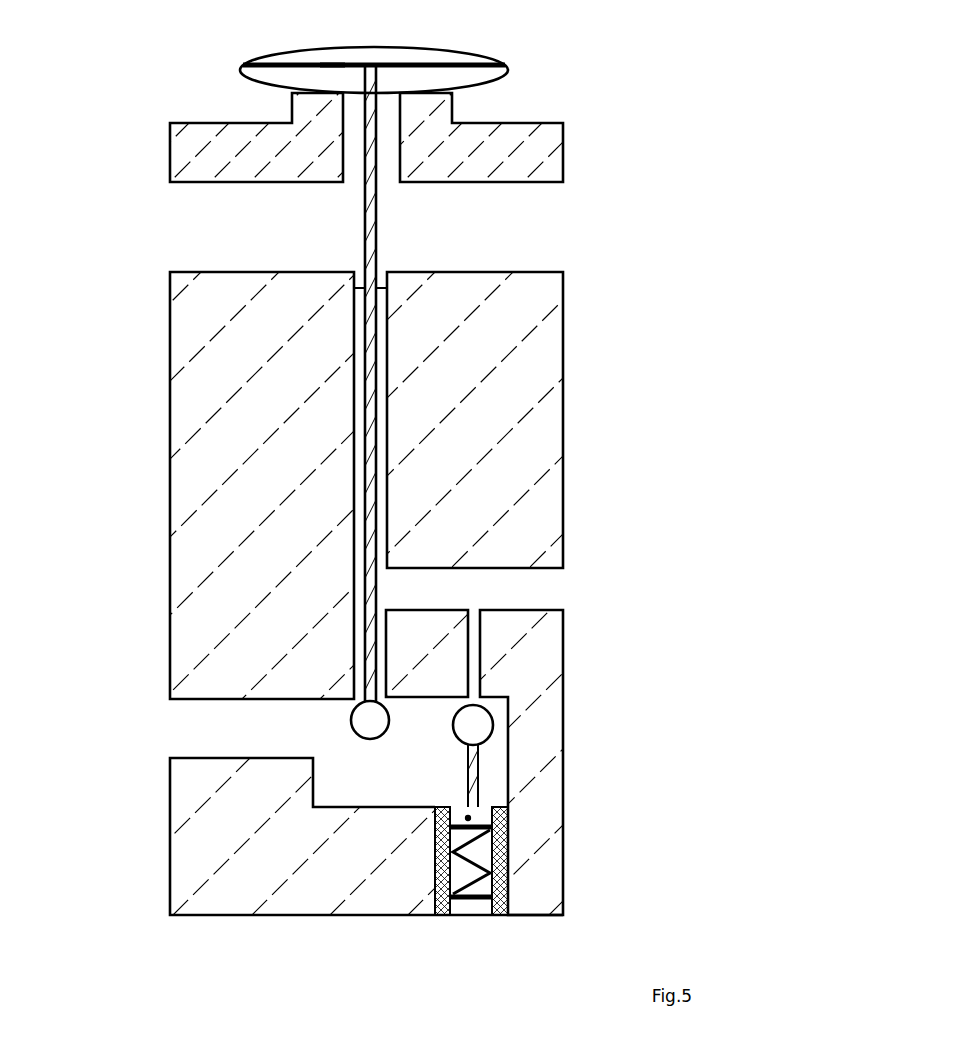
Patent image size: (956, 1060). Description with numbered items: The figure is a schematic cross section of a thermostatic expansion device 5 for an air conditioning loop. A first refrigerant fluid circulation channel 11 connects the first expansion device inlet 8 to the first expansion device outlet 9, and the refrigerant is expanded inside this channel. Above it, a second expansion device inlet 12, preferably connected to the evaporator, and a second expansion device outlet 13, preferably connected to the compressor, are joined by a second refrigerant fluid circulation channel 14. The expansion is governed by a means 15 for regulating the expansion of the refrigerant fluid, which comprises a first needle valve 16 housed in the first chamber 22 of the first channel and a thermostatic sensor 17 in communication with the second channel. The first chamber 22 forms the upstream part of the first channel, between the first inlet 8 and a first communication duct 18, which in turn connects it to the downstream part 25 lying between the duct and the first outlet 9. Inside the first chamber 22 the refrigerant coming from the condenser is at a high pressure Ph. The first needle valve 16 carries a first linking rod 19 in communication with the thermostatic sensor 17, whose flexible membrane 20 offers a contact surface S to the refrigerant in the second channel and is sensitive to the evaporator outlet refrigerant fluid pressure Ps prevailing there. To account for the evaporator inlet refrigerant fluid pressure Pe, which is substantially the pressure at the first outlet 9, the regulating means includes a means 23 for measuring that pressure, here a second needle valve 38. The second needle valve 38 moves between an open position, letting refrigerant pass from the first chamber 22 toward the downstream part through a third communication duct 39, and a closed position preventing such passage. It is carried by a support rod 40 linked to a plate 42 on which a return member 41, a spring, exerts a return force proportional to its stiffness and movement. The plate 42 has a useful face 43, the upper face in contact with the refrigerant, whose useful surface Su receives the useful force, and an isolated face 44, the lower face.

The expansion device 5 is at (614, 471).
The first expansion device inlet 8 is at (161, 725).
The first expansion device outlet 9 is at (568, 593).
The first refrigerant fluid circulation channel 11 is at (274, 735).
The second expansion device inlet 12 is at (554, 232).
The second expansion device outlet 13 is at (166, 227).
The second refrigerant fluid circulation channel 14 is at (475, 395).
The means for regulating the expansion of the refrigerant fluid 15 is at (356, 252).
The first needle valve 16 is at (360, 730).
The thermostatic sensor 17 is at (437, 47).
The first communication duct 18 is at (355, 635).
The first linking rod 19 is at (378, 590).
The membrane 20 is at (280, 62).
The first chamber 22 is at (396, 745).
The means for measuring the evaporator inlet refrigerant fluid pressure 23 is at (383, 250).
The downstream part 25 is at (458, 595).
The second needle valve 38 is at (452, 728).
The third communication duct 39 is at (482, 638).
The support rod 40 is at (480, 760).
The return member 41 is at (482, 855).
The plate 42 is at (468, 818).
The useful face 43 is at (484, 802).
The isolated face 44 is at (485, 826).
The contact surface S is at (327, 60).
The evaporator outlet refrigerant fluid pressure Ps is at (208, 233).
The evaporator inlet refrigerant fluid pressure Pe is at (491, 603).
The high pressure Ph is at (331, 778).
The useful surface Su is at (450, 806).